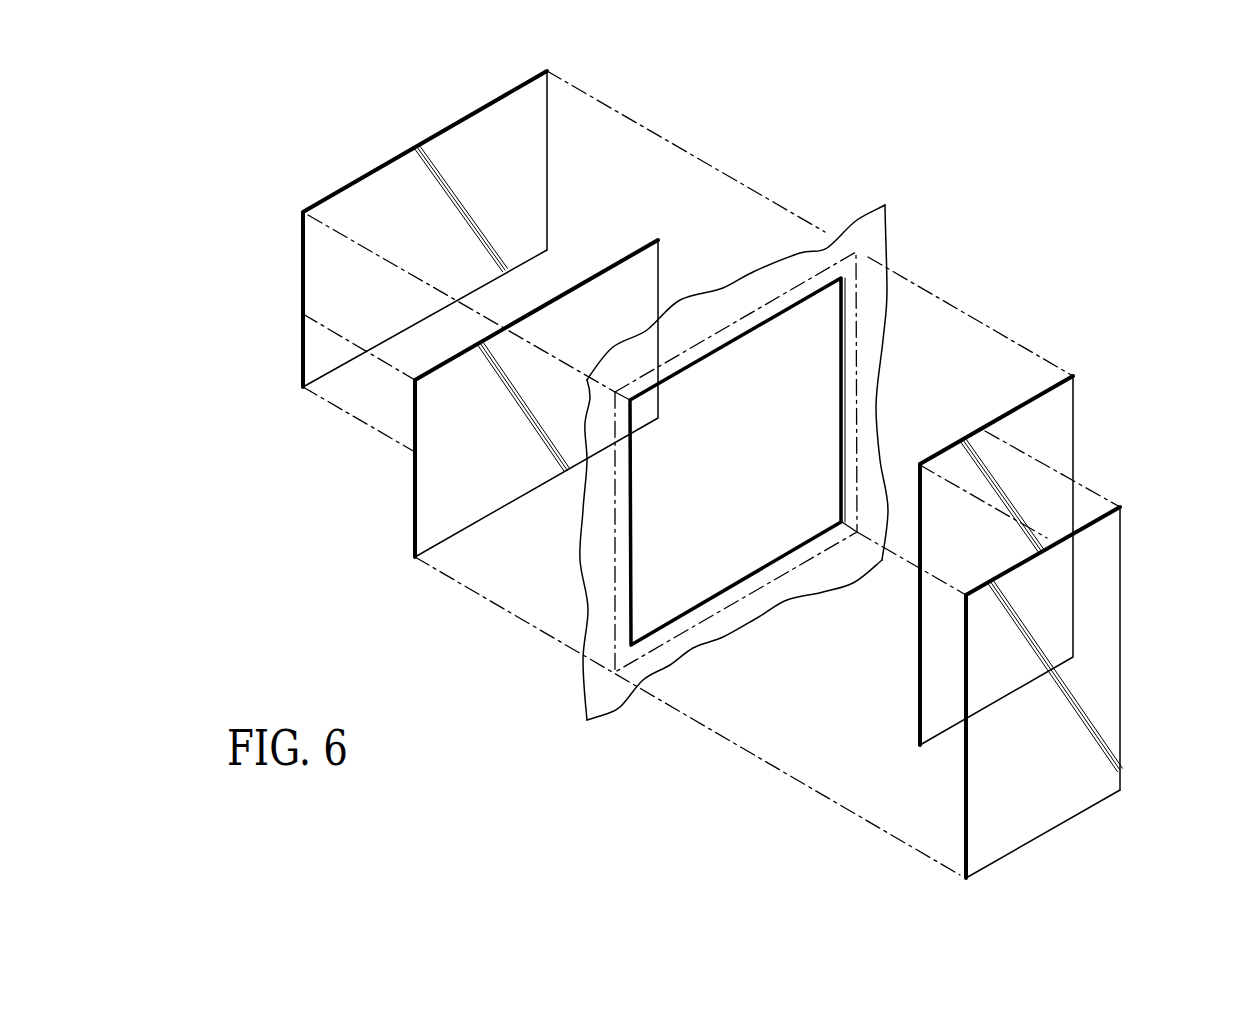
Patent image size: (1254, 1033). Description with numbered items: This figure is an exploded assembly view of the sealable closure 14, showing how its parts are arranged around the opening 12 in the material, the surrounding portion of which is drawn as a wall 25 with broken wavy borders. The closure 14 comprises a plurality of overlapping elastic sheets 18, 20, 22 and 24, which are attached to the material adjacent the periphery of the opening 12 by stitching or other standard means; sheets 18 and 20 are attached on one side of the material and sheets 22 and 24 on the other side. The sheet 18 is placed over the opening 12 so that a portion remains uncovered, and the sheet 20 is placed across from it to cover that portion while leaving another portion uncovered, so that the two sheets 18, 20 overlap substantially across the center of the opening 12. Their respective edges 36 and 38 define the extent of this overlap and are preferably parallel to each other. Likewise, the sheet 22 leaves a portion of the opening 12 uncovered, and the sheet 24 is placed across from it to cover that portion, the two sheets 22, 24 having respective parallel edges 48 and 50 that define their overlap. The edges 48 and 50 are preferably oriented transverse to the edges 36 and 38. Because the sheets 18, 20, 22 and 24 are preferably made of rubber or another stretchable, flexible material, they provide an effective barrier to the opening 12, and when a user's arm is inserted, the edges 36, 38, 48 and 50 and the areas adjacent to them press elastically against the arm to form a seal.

The opening 12 is at (840, 360).
The closure 14 is at (818, 178).
The elastic sheet 18 is at (1067, 423).
The elastic sheet 20 is at (1096, 792).
The elastic sheet 22 is at (647, 280).
The elastic sheet 24 is at (442, 150).
The housing wall 25 is at (612, 705).
The edge 36 is at (1126, 612).
The edge 38 is at (916, 660).
The edge 48 is at (598, 273).
The edge 50 is at (327, 378).